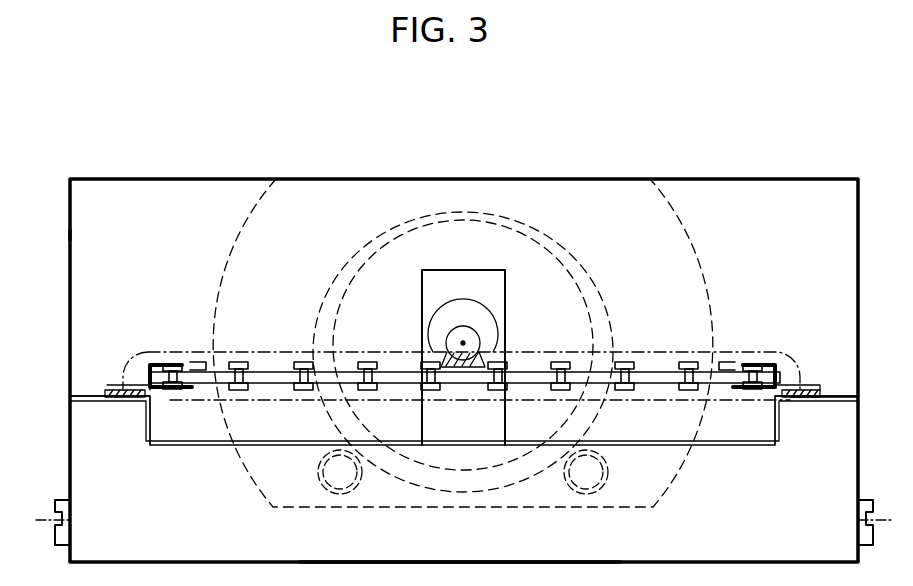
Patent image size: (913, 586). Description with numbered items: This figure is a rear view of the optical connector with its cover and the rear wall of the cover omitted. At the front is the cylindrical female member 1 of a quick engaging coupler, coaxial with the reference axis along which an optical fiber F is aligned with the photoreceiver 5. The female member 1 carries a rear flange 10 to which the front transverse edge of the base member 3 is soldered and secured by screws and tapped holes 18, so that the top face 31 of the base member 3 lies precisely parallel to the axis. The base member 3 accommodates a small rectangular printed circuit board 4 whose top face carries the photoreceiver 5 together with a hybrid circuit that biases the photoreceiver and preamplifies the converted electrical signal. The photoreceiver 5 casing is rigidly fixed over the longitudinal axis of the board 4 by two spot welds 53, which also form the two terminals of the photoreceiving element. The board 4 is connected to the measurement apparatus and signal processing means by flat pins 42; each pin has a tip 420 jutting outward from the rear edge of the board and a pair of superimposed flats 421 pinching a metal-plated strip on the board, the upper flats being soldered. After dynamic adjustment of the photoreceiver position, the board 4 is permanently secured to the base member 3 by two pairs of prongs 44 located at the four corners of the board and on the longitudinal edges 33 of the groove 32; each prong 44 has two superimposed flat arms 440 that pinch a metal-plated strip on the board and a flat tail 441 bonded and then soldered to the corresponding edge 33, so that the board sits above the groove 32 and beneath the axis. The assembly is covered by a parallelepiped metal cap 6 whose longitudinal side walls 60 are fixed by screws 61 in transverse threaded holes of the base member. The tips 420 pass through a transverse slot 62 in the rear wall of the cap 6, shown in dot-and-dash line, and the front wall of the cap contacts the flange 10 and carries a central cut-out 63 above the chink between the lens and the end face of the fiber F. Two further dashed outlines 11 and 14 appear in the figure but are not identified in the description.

The female member 1 is at (360, 245).
The base member 3 is at (468, 560).
The printed circuit board 4 is at (264, 370).
The photoreceiver 5 is at (452, 329).
The metal cap 6 is at (210, 179).
The rear flange 10 is at (666, 195).
The inner dashed contour 11 is at (552, 232).
The bearing ring 14 is at (494, 318).
The tapped holes 18 is at (332, 489).
The top face 31 is at (850, 393).
The groove 32 is at (204, 447).
The longitudinal edges 33 is at (70, 410).
The flat pins 42 is at (382, 335).
The prongs 44 is at (785, 365).
The spot welds 53 is at (486, 360).
The longitudinal side walls 60 is at (70, 232).
The screws 61 is at (864, 504).
The transverse slot 62 is at (738, 348).
The central cut-out 63 is at (502, 295).
The tip 420 is at (380, 348).
The superimposed flats 421 is at (368, 362).
The flat arms 440 is at (156, 361).
The flat tail 441 is at (126, 386).
The optical fiber F is at (463, 340).